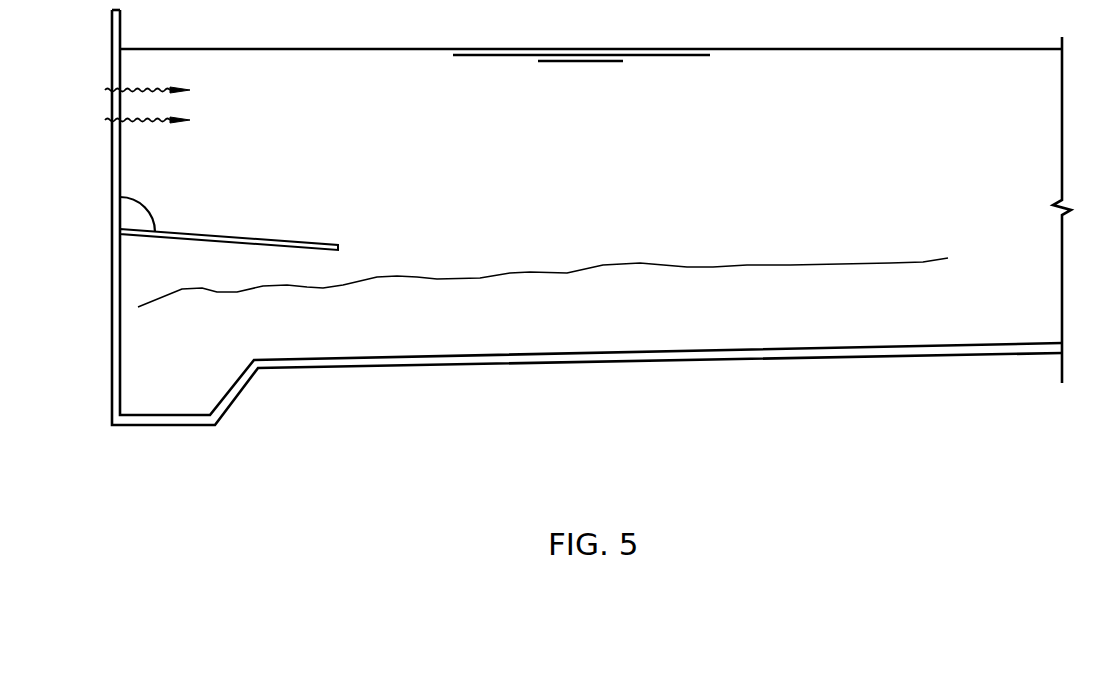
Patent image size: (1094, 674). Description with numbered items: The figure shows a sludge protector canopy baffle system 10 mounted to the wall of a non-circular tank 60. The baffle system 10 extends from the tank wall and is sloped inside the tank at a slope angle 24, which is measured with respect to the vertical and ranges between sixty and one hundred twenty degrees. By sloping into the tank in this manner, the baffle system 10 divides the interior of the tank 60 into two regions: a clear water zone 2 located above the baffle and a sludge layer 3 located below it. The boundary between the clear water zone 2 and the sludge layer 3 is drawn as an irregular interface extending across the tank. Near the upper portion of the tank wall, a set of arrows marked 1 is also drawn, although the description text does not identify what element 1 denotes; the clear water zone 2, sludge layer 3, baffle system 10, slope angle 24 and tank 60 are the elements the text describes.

The light 1 is at (157, 105).
The clear water zone 2 is at (543, 264).
The sludge layer 3 is at (542, 319).
The sludge protector canopy baffle system 10 is at (229, 230).
The slope angle 24 is at (147, 203).
The non-circular tank 60 is at (575, 217).